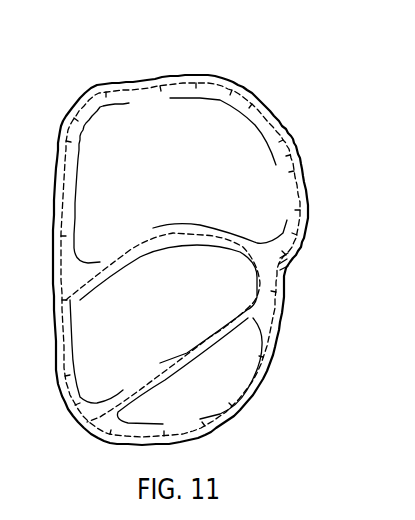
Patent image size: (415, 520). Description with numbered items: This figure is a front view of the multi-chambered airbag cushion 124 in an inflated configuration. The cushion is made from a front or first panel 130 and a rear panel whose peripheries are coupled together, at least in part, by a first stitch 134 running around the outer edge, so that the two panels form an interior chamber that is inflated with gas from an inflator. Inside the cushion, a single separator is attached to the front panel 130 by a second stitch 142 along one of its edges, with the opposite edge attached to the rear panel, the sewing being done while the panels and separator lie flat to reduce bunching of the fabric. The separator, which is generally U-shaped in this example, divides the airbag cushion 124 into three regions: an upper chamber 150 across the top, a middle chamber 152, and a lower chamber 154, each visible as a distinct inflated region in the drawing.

The airbag cushion 124 is at (303, 80).
The first panel 130 is at (262, 181).
The first stitch 134 is at (118, 93).
The second stitch 142 is at (192, 234).
The upper chamber 150 is at (150, 110).
The middle chamber 152 is at (90, 363).
The lower chamber 154 is at (240, 357).